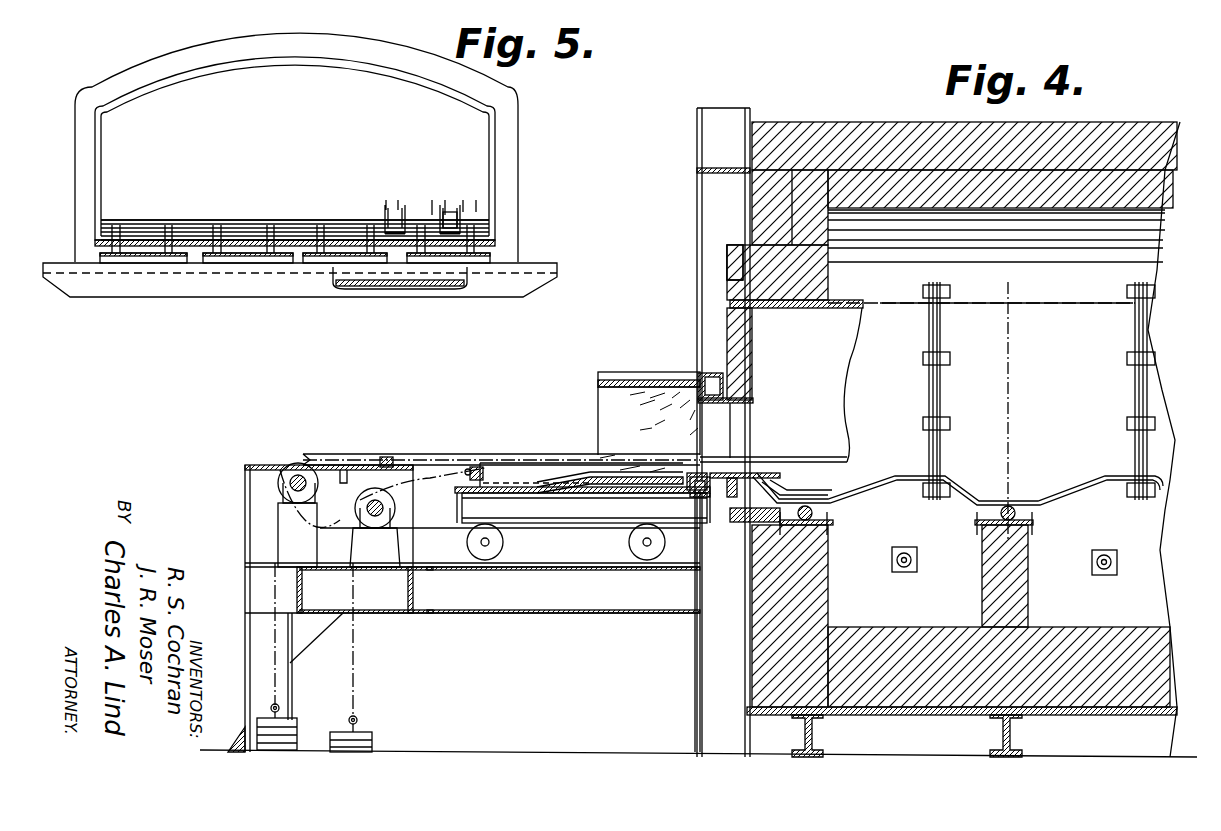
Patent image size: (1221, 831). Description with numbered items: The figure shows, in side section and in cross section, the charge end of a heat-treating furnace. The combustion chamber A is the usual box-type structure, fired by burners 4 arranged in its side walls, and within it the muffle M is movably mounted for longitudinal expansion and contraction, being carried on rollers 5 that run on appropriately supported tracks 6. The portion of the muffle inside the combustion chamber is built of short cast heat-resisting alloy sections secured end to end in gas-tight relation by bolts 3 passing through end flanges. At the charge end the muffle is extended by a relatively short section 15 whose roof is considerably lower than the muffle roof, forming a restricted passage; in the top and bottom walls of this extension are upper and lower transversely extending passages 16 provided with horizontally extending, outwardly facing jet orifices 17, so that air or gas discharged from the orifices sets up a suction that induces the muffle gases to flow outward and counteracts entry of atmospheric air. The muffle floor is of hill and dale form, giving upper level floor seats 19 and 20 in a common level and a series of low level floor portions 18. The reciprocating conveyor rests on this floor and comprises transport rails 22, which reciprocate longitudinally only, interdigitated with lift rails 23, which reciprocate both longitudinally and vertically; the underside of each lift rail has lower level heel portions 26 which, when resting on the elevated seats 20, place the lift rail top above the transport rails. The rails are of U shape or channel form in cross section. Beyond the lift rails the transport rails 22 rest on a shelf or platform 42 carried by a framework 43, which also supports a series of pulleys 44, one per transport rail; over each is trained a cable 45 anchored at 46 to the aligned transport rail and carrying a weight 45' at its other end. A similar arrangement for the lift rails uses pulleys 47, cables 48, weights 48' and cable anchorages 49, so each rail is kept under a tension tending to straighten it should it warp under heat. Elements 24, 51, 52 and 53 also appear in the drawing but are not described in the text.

In FIG. 4, the combustion chamber A is at (854, 115).
In FIG. 5, the muffle M is at (140, 68).
In FIG. 4, the muffle M is at (1006, 338).
In FIG. 4, the bolts 3 is at (924, 292).
In FIG. 4, the burners 4 is at (904, 558).
In FIG. 5, the rollers 5 is at (435, 280).
In FIG. 4, the rollers 5 is at (830, 520).
In FIG. 5, the tracks 6 is at (472, 293).
In FIG. 4, the tracks 6 is at (975, 523).
In FIG. 4, the short section 15 is at (630, 383).
In FIG. 4, the transversely extending passages 16 is at (710, 400).
In FIG. 4, the jet orifices 17 is at (684, 474).
In FIG. 5, the low level floor portions 18 is at (190, 240).
In FIG. 5, the upper level floor seats 19 is at (250, 222).
In FIG. 5, the upper level floor seats 20 is at (295, 230).
In FIG. 5, the transport rails 22 is at (413, 210).
In FIG. 4, the transport rails 22 is at (451, 457).
In FIG. 5, the lift rails 23 is at (446, 215).
In FIG. 4, the lift rails 23 is at (542, 463).
In FIG. 5, the tray support 24 is at (283, 260).
In FIG. 4, the lower level portions 26 is at (805, 478).
In FIG. 4, the shelf or platform 42 is at (363, 468).
In FIG. 4, the framework 43 is at (245, 590).
In FIG. 4, the pulleys 44 is at (286, 474).
In FIG. 4, the cable 45 is at (271, 595).
In FIG. 4, the weight 45' is at (293, 715).
In FIG. 4, the cable anchorage 46 is at (395, 460).
In FIG. 4, the pulleys 47 is at (359, 527).
In FIG. 4, the cables 48 is at (419, 591).
In FIG. 4, the weights 48' is at (377, 716).
In FIG. 4, the cable anchorages 49 is at (477, 467).
In FIG. 4, the lift carriage 51 is at (548, 493).
In FIG. 4, the carriage frame 52 is at (582, 526).
In FIG. 4, the carriage wheel 53 is at (642, 556).